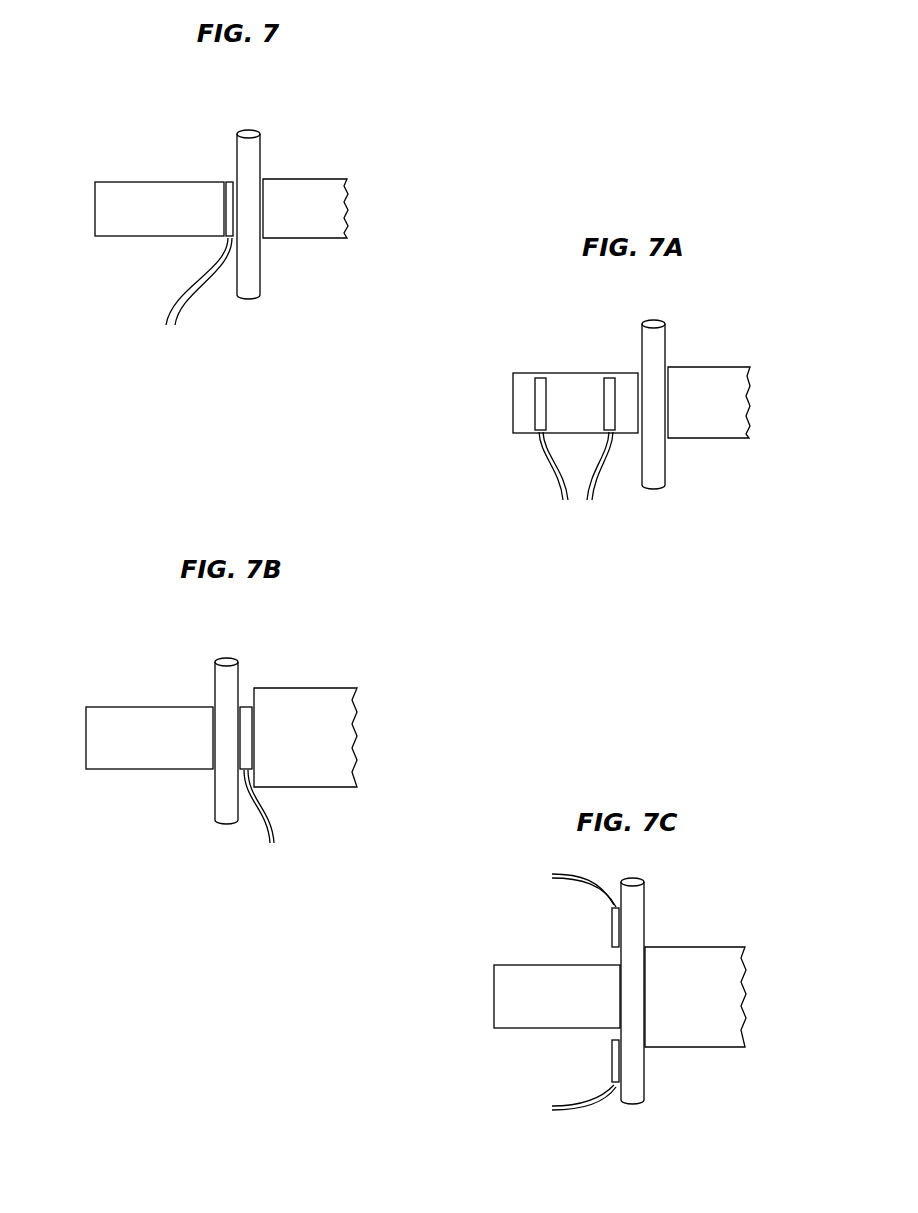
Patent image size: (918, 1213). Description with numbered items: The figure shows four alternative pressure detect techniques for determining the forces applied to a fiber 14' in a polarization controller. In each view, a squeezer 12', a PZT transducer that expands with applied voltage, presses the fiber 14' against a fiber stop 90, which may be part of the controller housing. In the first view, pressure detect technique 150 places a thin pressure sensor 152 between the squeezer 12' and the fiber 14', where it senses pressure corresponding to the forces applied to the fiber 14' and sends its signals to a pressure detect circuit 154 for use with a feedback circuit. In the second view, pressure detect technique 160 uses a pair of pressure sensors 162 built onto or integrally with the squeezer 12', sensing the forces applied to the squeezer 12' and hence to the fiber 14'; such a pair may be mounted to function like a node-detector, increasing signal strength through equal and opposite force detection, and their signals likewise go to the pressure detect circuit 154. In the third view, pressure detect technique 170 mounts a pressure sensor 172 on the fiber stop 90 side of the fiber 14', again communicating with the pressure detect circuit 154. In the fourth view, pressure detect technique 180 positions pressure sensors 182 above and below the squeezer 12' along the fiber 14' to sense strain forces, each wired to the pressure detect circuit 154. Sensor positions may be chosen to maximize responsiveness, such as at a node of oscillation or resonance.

In FIG. 7, the squeezer 12' is at (159, 238).
In FIG. 7A, the squeezer 12' is at (530, 433).
In FIG. 7B, the squeezer 12' is at (149, 760).
In FIG. 7, the fiber 14' is at (297, 195).
In FIG. 7A, the fiber 14' is at (700, 387).
In FIG. 7B, the fiber 14' is at (177, 713).
In FIG. 7C, the fiber 14' is at (688, 984).
In FIG. 7, the fiber stop 90 is at (320, 239).
In FIG. 7A, the fiber stop 90 is at (729, 438).
In FIG. 7B, the fiber stop 90 is at (322, 787).
In FIG. 7C, the fiber stop 90 is at (713, 1047).
In FIG. 7, the pressure detect technique 150 is at (304, 326).
In FIG. 7, the pressure sensor 152 is at (228, 178).
In FIG. 7, the pressure detect circuit 154 is at (190, 311).
In FIG. 7A, the pressure detect circuit 154 is at (576, 498).
In FIG. 7B, the pressure detect circuit 154 is at (271, 837).
In FIG. 7C, the pressure detect circuit 154 is at (554, 995).
In FIG. 7A, the pressure detect technique 160 is at (697, 513).
In FIG. 7A, the pressure sensors 162 is at (549, 394).
In FIG. 7B, the pressure detect technique 170 is at (172, 857).
In FIG. 7B, the pressure sensor 172 is at (245, 705).
In FIG. 7C, the pressure detect technique 180 is at (709, 1095).
In FIG. 7C, the pressure sensors 182 is at (612, 925).